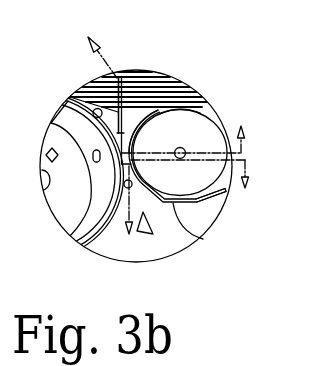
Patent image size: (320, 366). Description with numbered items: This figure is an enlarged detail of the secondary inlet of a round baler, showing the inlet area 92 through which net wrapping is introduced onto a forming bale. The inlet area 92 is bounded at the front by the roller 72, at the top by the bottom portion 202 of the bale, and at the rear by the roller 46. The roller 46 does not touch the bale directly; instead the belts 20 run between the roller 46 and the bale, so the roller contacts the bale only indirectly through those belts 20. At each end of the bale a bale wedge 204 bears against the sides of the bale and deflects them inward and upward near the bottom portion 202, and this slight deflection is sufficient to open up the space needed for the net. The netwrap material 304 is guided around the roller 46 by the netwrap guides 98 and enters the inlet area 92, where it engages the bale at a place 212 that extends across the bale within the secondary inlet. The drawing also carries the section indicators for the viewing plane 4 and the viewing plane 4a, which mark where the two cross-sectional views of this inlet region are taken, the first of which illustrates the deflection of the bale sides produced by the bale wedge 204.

The viewing plane 4— 4 is at (170, 88).
The viewing plane 4a— 4a is at (198, 211).
The belts 20 is at (230, 190).
The roller 46 is at (208, 127).
The roller 72 is at (85, 240).
The inlet area 92 is at (150, 234).
The netwrap guides 98 is at (203, 239).
The bottom portion 202 is at (150, 120).
The bale wedge 204 is at (117, 105).
The place 212 is at (172, 110).
The netwrap material 304 is at (173, 203).